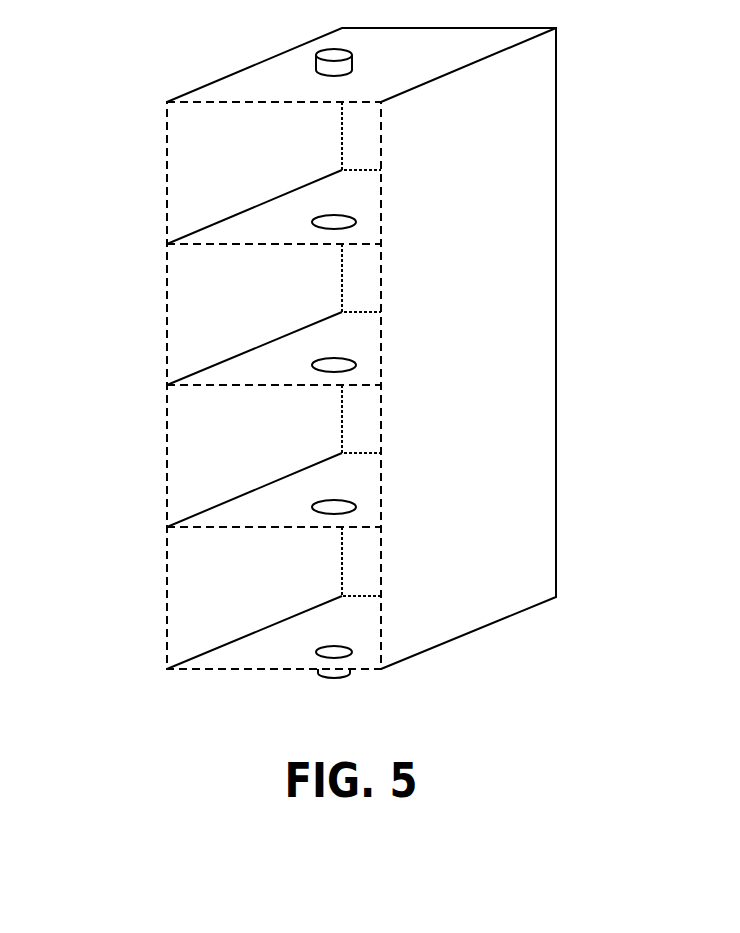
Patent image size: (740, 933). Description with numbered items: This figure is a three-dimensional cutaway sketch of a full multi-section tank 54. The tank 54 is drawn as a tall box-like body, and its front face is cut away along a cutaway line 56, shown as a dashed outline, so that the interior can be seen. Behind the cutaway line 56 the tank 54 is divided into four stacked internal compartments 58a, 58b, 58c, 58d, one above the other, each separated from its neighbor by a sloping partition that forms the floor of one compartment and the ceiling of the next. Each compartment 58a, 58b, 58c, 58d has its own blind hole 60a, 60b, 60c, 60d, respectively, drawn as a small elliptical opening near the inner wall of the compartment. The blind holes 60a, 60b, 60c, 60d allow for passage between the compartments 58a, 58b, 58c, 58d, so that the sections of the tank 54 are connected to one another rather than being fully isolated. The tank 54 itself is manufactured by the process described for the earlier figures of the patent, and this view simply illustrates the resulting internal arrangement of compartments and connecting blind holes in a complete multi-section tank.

The multi-section tank 54 is at (596, 130).
The cutaway line 56 is at (163, 132).
The compartment 58a is at (128, 177).
The compartment 58b is at (128, 318).
The compartment 58c is at (128, 460).
The compartment 58d is at (128, 604).
The blind hole 60a is at (313, 223).
The blind hole 60b is at (313, 365).
The blind hole 60c is at (313, 507).
The blind hole 60d is at (316, 652).